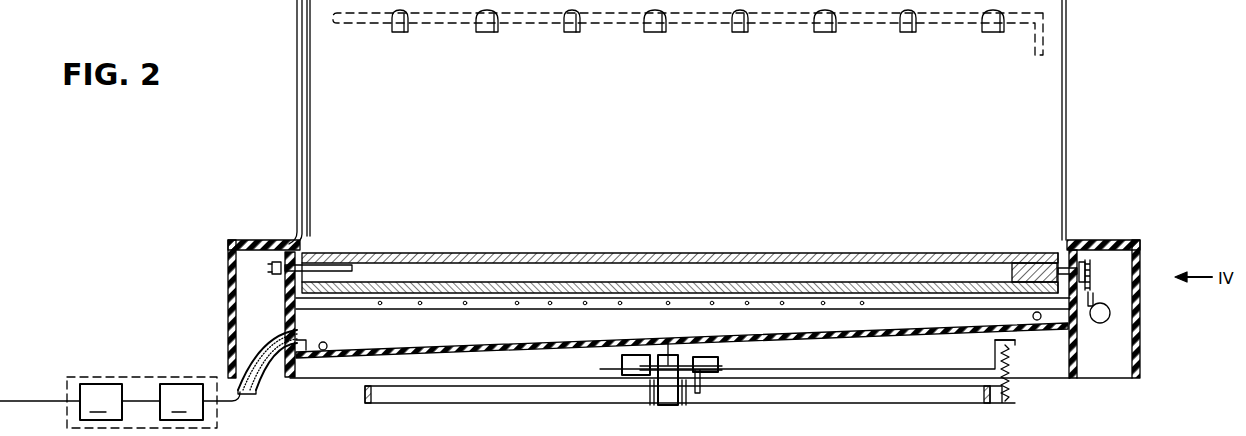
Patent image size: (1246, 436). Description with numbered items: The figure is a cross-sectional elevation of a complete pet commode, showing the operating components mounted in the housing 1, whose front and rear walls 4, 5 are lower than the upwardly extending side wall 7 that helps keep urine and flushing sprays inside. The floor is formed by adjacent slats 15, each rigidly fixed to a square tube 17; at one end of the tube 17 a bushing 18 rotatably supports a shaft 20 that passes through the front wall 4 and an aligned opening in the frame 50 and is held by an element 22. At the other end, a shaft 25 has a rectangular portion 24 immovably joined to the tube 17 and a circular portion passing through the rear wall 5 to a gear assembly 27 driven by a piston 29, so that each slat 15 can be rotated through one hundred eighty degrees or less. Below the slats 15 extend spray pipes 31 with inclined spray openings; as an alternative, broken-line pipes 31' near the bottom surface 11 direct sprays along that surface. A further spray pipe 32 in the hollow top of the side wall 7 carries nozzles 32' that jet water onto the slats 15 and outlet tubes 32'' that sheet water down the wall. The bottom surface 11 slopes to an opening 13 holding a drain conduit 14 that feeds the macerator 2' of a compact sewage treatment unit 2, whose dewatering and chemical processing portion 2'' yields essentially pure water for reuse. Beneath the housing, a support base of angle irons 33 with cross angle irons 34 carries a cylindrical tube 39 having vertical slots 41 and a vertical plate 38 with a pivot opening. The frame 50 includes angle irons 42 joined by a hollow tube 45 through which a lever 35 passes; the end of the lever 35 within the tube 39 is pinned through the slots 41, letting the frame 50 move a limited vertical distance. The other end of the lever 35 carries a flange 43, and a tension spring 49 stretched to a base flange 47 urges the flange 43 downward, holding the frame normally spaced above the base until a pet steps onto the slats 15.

The housing 1 is at (289, 39).
The sewage treatment unit 2 is at (120, 385).
The macerator 2' is at (181, 402).
The waste dewatering and chemical processing portion 2'' is at (101, 402).
The front wall 4 is at (262, 240).
The rear wall 5 is at (1118, 240).
The side wall 7 is at (698, 106).
The bottom surface 11 is at (500, 346).
The opening 13 is at (306, 340).
The drain conduit 14 is at (262, 380).
The slat 15 is at (494, 253).
The tube 17 is at (612, 253).
The bushing 18 is at (338, 265).
The shaft 20 is at (680, 253).
The element 22 is at (268, 268).
The rectangular portion 24 is at (1030, 263).
The shaft 25 is at (1068, 258).
The gear assembly 27 is at (1100, 276).
The piston 29 is at (1110, 317).
The spray pipe 31 is at (683, 316).
The spray pipe 31' is at (680, 334).
The spray pipe 32 is at (654, 33).
The nozzle 32' is at (740, 33).
The outlet tube 32'' is at (762, 43).
The angle iron 33 is at (365, 396).
The angle iron 34 is at (648, 400).
The lever 35 is at (858, 370).
The support plate 38 is at (700, 393).
The cylindrical tube 39 is at (668, 405).
The vertical slot 41 is at (668, 345).
The angle iron 42 is at (622, 362).
The flange 43 is at (1015, 342).
The hollow tube 45 is at (700, 366).
The flange 47 is at (1003, 404).
The tension spring 49 is at (1008, 392).
The frame 50 is at (1083, 355).